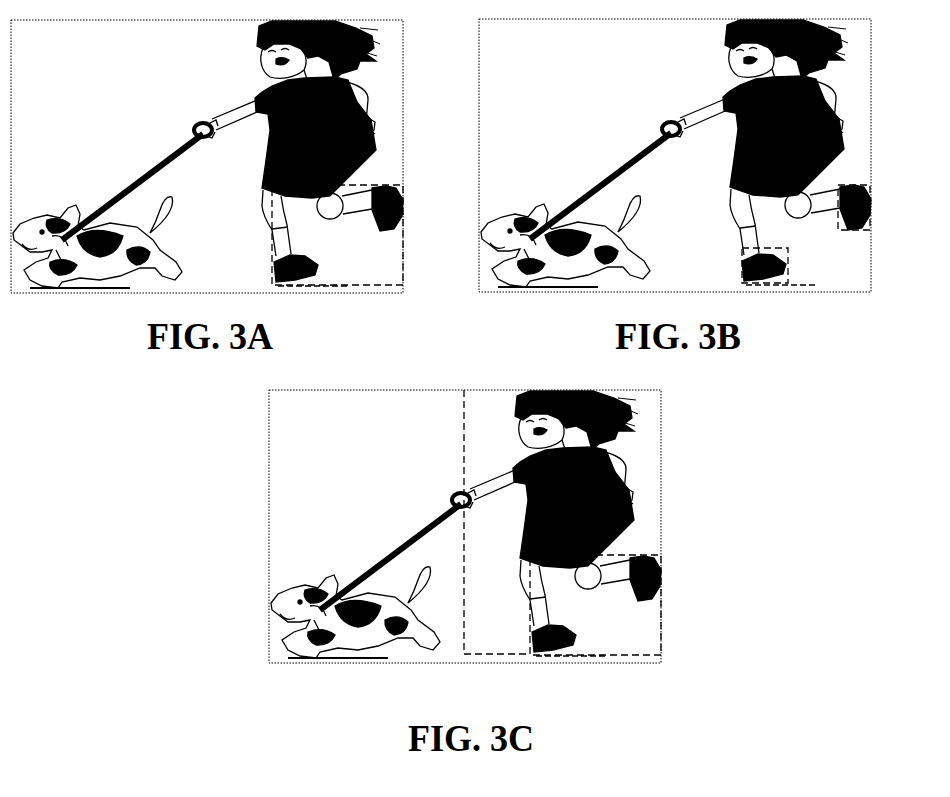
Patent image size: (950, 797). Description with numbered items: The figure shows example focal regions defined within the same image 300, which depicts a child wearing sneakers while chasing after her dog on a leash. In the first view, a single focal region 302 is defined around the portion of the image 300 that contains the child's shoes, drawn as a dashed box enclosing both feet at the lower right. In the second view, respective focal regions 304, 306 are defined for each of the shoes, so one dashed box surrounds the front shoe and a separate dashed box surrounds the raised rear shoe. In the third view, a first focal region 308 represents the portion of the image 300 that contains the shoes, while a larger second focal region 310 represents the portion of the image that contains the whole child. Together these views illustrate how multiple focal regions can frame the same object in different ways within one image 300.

In FIG. 3A, the image 300 is at (404, 45).
In FIG. 3B, the image 300 is at (873, 44).
In FIG. 3C, the image 300 is at (663, 405).
In FIG. 3A, the focal region 302 is at (395, 286).
In FIG. 3B, the focal region 304 is at (770, 284).
In FIG. 3B, the focal region 306 is at (855, 231).
In FIG. 3C, the first focal region 308 is at (530, 633).
In FIG. 3C, the second focal region 310 is at (462, 643).